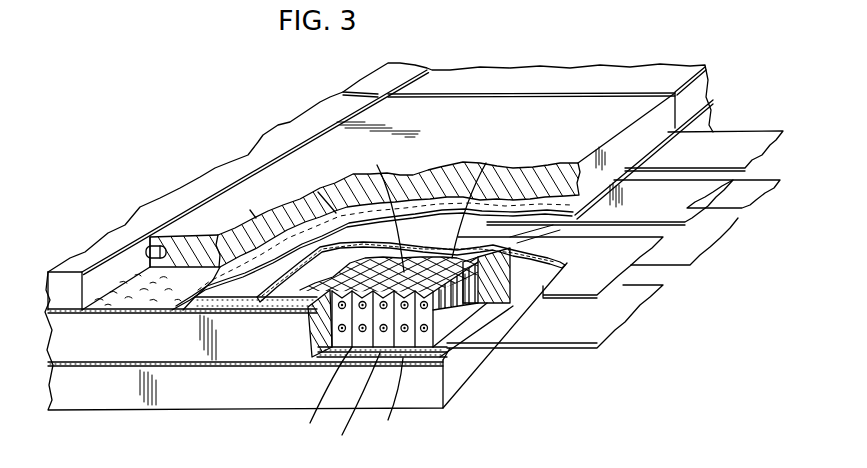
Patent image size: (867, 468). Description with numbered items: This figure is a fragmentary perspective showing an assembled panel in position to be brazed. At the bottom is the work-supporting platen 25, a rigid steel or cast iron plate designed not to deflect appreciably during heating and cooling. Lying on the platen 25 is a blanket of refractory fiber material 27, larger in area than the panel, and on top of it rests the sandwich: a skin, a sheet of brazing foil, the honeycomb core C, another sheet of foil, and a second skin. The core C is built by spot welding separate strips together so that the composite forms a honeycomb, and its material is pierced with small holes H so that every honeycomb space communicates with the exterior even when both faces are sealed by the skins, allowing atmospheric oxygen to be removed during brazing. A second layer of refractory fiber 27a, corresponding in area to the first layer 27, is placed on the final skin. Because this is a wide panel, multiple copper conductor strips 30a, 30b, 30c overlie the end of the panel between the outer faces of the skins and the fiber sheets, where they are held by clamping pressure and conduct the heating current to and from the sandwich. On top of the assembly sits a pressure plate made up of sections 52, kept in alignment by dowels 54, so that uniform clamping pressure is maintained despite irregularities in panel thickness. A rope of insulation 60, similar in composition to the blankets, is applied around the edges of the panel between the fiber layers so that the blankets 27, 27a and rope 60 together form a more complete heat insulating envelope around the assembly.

The work-supporting platen 25 is at (80, 398).
The refractory fiber blanket 27 is at (182, 368).
The second refractory fiber layer 27a is at (543, 205).
The conductor strip 30a is at (600, 267).
The conductor strip 30b is at (656, 208).
The conductor strip 30c is at (708, 162).
The pressure plate section 52 is at (280, 137).
The dowel 54 is at (158, 245).
The rope of insulation 60 is at (272, 350).
The small holes H is at (338, 308).
The honeycomb core C is at (434, 298).